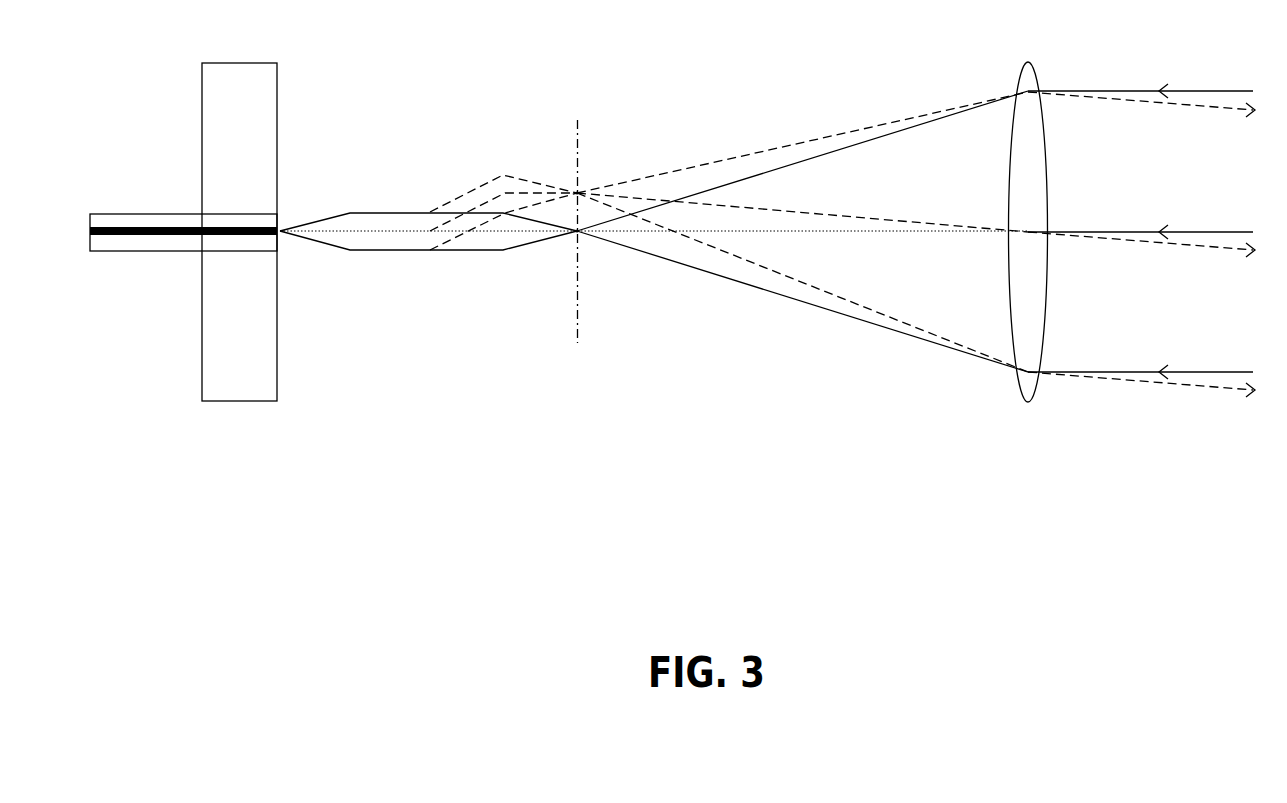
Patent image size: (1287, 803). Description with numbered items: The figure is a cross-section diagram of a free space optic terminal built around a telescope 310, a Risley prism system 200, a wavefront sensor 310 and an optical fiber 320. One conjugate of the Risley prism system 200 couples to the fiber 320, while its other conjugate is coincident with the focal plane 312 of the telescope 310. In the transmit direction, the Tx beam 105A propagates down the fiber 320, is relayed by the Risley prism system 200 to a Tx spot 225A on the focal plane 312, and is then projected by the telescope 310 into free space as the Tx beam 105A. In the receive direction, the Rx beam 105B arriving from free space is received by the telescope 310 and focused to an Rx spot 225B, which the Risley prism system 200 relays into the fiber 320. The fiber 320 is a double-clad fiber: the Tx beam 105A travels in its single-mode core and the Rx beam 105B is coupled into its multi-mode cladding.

The optical fiber 320 is at (129, 215).
The telescope 310 is at (260, 389).
The Risley prism system 200 is at (445, 168).
The focal plane 312 is at (579, 186).
The Tx spot 225A is at (592, 186).
The Rx spot 225B is at (585, 247).
The Rx beam 105B is at (916, 214).
The Tx beam 105A is at (929, 268).